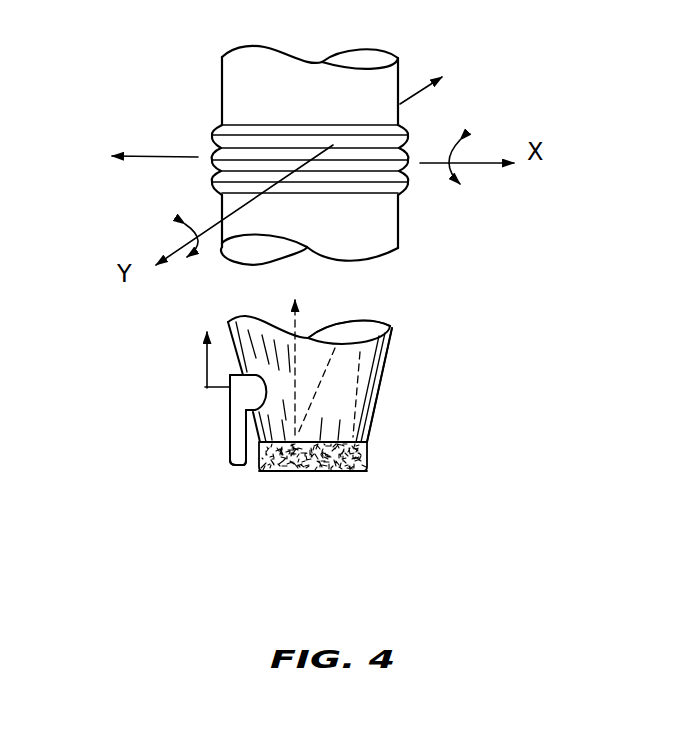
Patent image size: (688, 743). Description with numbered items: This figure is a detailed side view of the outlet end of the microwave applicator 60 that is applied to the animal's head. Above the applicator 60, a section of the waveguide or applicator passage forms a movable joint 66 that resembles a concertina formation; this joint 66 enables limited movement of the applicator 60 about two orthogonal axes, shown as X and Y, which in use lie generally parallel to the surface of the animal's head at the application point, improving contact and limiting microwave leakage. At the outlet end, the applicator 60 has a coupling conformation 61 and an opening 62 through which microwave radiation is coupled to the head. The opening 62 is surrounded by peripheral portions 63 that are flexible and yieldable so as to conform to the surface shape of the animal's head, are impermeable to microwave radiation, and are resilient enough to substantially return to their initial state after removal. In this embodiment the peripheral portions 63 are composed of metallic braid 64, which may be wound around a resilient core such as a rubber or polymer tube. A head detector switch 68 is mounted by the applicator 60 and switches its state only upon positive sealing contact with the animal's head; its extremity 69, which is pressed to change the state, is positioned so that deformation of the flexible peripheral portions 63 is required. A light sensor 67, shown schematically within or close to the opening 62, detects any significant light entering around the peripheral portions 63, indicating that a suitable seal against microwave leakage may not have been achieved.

The movable joint 66 is at (200, 102).
The applicator 60 is at (392, 382).
The light sensor 67 is at (335, 345).
The braid 64 is at (337, 442).
The peripheral portions 63 is at (368, 472).
The opening 62 is at (305, 486).
The coupling conformation 61 is at (350, 488).
The head detector switch 68 is at (222, 426).
The extremity 69 is at (237, 465).